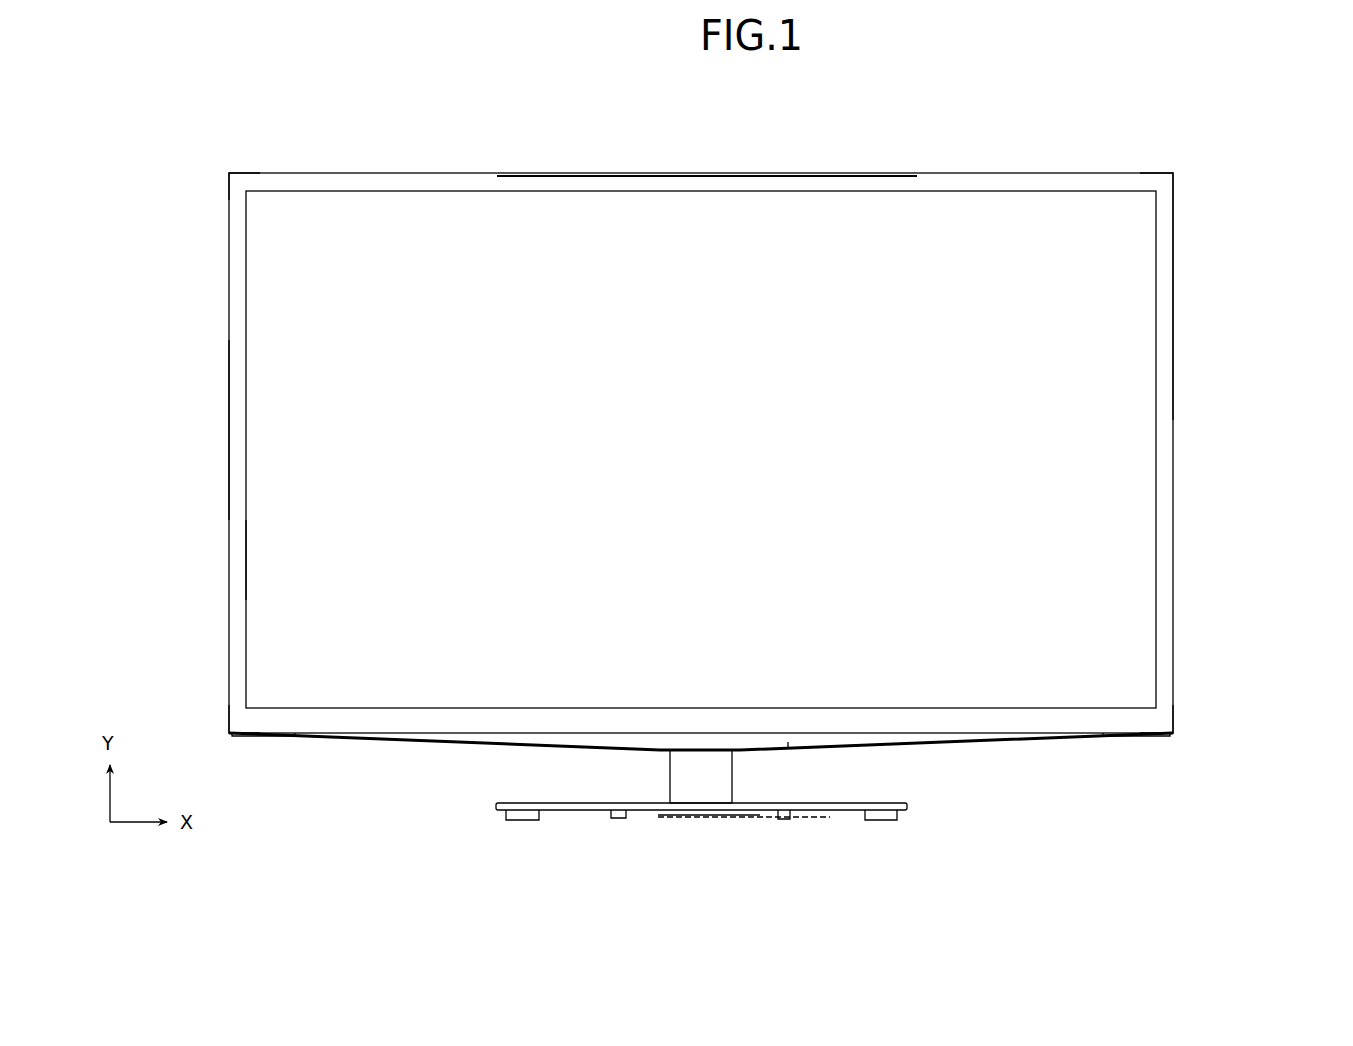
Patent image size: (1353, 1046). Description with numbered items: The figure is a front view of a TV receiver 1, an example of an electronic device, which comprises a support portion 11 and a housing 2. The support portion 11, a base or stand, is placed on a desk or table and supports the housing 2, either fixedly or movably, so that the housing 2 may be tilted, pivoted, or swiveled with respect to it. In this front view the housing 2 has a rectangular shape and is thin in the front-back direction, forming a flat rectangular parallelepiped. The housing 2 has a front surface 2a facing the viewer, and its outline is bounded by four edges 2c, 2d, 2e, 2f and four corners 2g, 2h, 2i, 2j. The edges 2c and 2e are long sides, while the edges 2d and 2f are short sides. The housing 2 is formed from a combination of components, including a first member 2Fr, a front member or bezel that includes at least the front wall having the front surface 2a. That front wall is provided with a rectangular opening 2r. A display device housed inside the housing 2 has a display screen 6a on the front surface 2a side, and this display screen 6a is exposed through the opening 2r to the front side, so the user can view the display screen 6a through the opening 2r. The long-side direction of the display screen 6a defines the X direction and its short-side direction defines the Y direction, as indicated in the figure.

The TV receiver 1 is at (1058, 132).
The housing 2 is at (980, 170).
The first member 2Fr is at (1170, 258).
The front surface 2a is at (237, 384).
The edge 2c is at (631, 173).
The edge 2d is at (1173, 343).
The edge 2e is at (983, 742).
The edge 2f is at (228, 463).
The corner 2g is at (229, 173).
The corner 2h is at (1173, 173).
The corner 2i is at (1173, 733).
The corner 2j is at (229, 733).
The opening 2r is at (254, 565).
The display screen 6a is at (1140, 494).
The support portion 11 is at (571, 811).